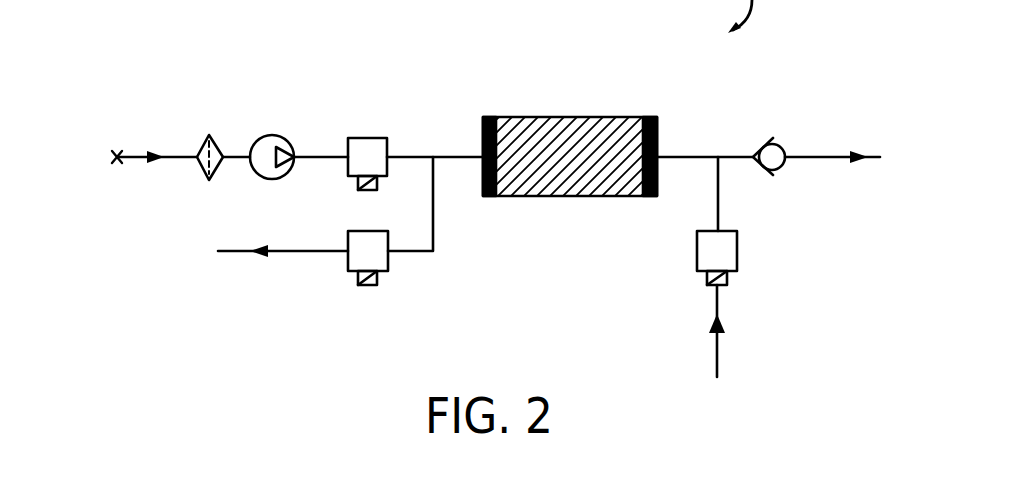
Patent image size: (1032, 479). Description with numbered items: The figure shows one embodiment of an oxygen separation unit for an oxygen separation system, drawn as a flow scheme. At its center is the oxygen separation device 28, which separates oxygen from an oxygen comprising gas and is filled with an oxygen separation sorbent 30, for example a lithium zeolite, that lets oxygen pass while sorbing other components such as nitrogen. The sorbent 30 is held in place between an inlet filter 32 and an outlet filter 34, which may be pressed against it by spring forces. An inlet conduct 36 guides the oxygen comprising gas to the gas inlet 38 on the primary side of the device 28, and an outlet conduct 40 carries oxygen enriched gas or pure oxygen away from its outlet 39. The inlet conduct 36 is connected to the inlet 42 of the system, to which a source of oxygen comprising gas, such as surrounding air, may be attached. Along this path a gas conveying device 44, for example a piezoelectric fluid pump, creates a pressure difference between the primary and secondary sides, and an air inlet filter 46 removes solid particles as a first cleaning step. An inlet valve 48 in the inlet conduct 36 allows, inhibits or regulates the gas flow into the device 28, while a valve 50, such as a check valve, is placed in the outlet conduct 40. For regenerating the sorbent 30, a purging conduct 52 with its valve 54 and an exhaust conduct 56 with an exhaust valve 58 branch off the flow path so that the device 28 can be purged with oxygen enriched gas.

The oxygen separation device 28 is at (570, 160).
The oxygen separation sorbent 30 is at (572, 172).
The inlet filter 32 is at (494, 116).
The outlet filter 34 is at (645, 116).
The inlet conduct 36 is at (316, 156).
The gas inlet 38 is at (482, 156).
The outlet 39 is at (661, 155).
The outlet conduct 40 is at (815, 155).
The inlet 42 is at (117, 153).
The gas conveying device 44 is at (272, 134).
The air inlet filter 46 is at (209, 134).
The inlet valve 48 is at (368, 137).
The valve 50 is at (766, 145).
The purging conduct 52 is at (718, 354).
The valve 54 is at (738, 250).
The exhaust conduct 56 is at (300, 254).
The exhaust valve 58 is at (368, 287).